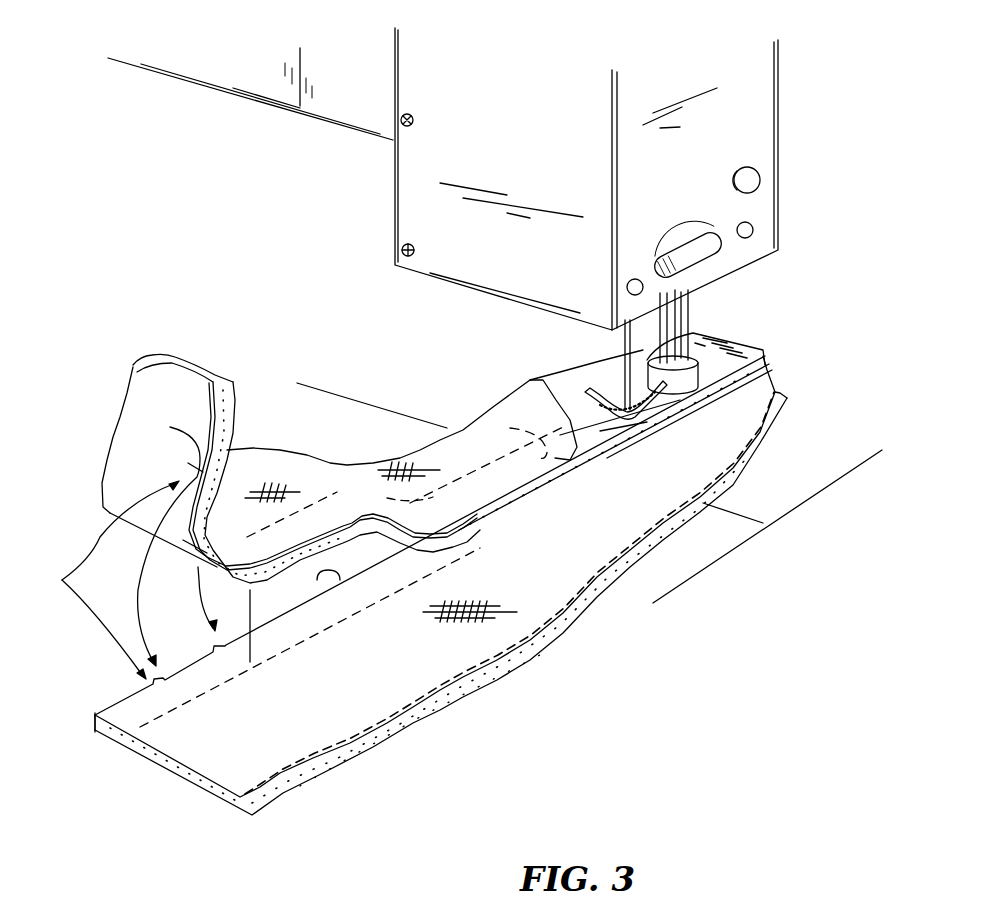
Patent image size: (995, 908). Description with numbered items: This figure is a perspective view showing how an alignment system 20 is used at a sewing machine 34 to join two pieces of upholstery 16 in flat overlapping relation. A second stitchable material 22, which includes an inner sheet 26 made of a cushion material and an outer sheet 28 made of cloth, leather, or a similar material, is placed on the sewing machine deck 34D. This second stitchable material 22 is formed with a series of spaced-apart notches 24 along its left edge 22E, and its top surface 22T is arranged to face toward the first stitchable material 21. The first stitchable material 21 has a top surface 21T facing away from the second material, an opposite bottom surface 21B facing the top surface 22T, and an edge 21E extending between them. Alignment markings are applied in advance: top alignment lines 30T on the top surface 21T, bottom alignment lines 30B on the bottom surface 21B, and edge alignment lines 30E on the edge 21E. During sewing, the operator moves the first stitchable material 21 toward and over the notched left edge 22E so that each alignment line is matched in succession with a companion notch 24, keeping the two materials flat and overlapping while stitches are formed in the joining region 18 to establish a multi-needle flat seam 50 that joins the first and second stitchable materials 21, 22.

The sewing machine 34 is at (786, 176).
The upholstery 16 is at (720, 323).
The multi-needle (flat) seam 50 is at (737, 336).
The second stitchable material 22 is at (192, 795).
The outer sheet 28 is at (530, 648).
The inner sheet 26 is at (450, 698).
The left edge 22E is at (88, 717).
The top surface 22T is at (382, 680).
The notches 24 is at (515, 427).
The first stitchable material 21 is at (197, 352).
The bottom surface 21B is at (150, 485).
The edge alignment lines 30E is at (455, 547).
The top alignment lines 30T is at (343, 530).
The top surface 21T is at (470, 458).
The bottom alignment lines 30B is at (163, 541).
The alignment system 20 is at (62, 580).
The edge 21E is at (250, 660).
The joining region 18 is at (402, 560).
The sewing machine deck 34D is at (756, 496).